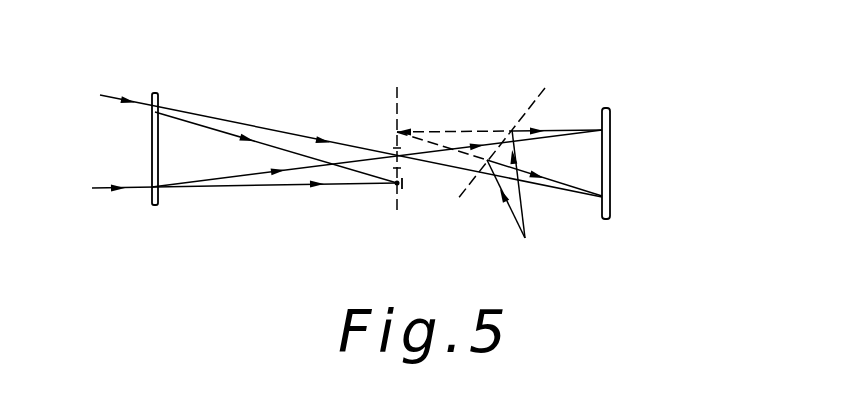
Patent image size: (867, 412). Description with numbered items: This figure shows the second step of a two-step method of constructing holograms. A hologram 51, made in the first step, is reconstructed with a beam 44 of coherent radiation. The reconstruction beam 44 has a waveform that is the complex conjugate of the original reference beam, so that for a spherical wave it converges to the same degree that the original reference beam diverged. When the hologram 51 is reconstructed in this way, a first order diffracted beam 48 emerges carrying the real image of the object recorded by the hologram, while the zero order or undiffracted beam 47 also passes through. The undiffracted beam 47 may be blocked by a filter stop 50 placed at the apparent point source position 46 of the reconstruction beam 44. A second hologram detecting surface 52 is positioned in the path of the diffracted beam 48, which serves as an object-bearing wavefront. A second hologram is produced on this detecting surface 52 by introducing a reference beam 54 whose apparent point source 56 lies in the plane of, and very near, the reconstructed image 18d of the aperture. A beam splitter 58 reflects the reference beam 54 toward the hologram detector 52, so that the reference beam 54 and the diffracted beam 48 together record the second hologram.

The reconstruction beam 44 is at (103, 94).
The hologram 51 is at (155, 93).
The second hologram detecting surface 52 is at (605, 107).
The first order diffracted beam 48 is at (270, 137).
The zero order beam 47 is at (262, 188).
The apparent point source position 46 is at (394, 188).
The filter stop 50 is at (405, 188).
The reconstructed image of the aperture 18d is at (390, 148).
The apparent point source 56 is at (403, 125).
The beam splitter 58 is at (543, 92).
The reference beam 54 is at (513, 217).